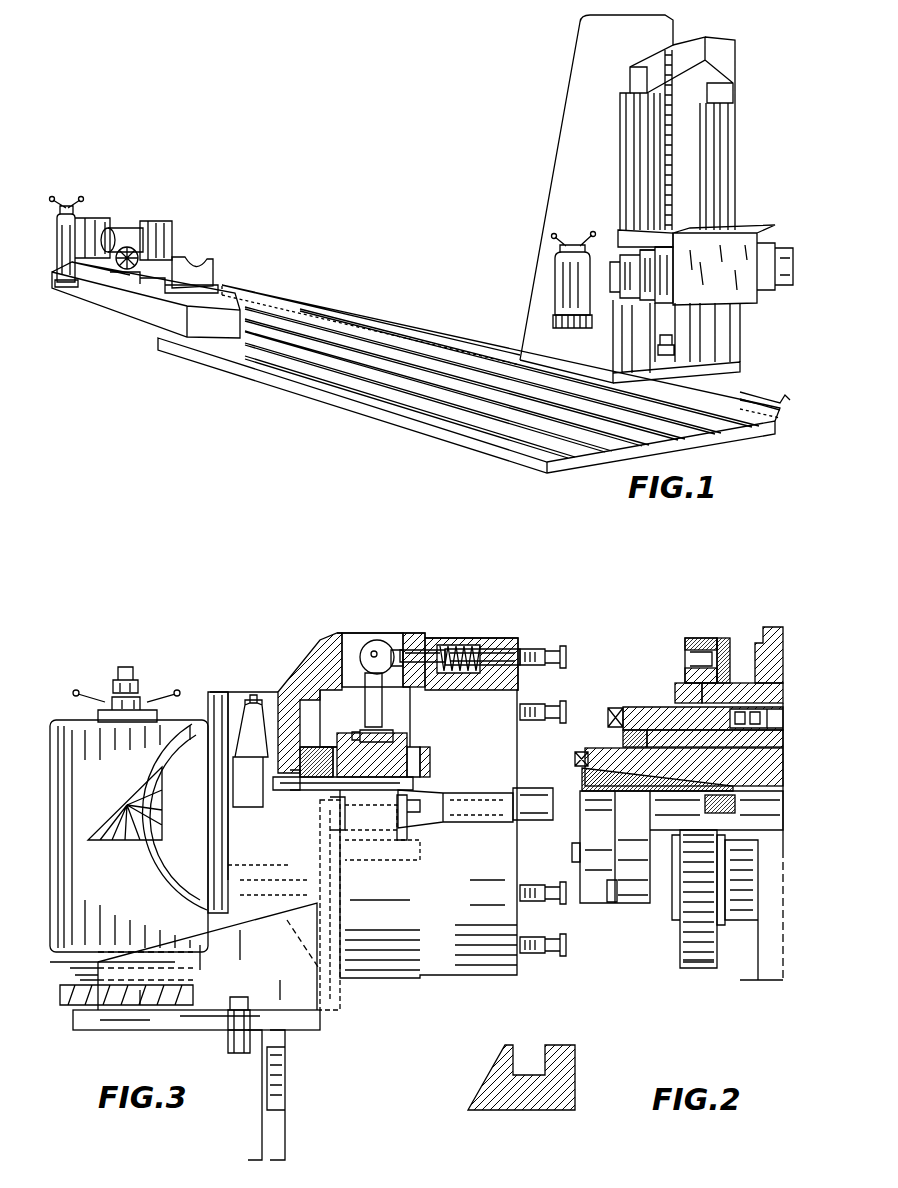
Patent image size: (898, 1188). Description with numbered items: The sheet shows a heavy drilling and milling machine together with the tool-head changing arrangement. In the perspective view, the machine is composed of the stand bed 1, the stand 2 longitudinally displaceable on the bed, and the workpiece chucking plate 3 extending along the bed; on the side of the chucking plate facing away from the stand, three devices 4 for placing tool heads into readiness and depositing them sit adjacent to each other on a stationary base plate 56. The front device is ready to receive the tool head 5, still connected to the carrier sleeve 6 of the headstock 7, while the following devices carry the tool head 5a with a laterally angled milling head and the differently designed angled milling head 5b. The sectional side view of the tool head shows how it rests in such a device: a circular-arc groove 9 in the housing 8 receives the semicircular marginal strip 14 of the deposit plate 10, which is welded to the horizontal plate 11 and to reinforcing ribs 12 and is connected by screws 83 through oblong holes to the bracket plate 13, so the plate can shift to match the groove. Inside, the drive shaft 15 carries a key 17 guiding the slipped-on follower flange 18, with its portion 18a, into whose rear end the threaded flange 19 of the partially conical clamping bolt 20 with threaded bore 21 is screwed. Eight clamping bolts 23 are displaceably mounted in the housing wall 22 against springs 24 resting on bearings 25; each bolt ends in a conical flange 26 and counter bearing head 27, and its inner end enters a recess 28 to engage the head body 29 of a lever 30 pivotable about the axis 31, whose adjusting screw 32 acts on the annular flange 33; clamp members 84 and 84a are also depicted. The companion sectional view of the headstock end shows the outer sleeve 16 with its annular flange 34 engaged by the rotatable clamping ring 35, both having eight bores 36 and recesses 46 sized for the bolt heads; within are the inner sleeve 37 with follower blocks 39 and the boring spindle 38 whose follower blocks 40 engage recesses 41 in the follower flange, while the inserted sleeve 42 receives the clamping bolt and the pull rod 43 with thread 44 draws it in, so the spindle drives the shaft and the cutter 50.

In FIG. 1, the stand bed 1 is at (748, 398).
In FIG. 1, the stand 2 is at (578, 148).
In FIG. 1, the workpiece chucking plate 3 is at (320, 390).
In FIG. 1, the device for placing tool heads into readiness and depositing tool heads 4 is at (153, 210).
In FIG. 1, the tool head 5 is at (604, 310).
In FIG. 3, the tool head 5 is at (262, 672).
In FIG. 1, the tool head with laterally angled off milling head 5a is at (168, 226).
In FIG. 1, the angled milling head 5b is at (100, 222).
In FIG. 1, the carrier sleeve 6 is at (640, 246).
In FIG. 1, the headstock 7 is at (735, 258).
In FIG. 1, the housing 8 is at (652, 262).
In FIG. 3, the housing 8 is at (432, 625).
In FIG. 1, the groove 9 is at (622, 265).
In FIG. 3, the groove 9 is at (333, 648).
In FIG. 1, the deposit plate 10 is at (214, 276).
In FIG. 3, the deposit plate 10 is at (335, 997).
In FIG. 3, the plate 11 is at (148, 1017).
In FIG. 3, the reinforcing ribs 12 is at (212, 980).
In FIG. 3, the bracket plate 13 is at (253, 1121).
In FIG. 1, the marginal strip 14 is at (188, 262).
In FIG. 3, the drive shaft 15 is at (368, 803).
In FIG. 2, the outer sleeve 16 is at (685, 680).
In FIG. 3, the key 17 is at (363, 800).
In FIG. 3, the follower flange 18 is at (365, 755).
In FIG. 3, the sleeve portion 18a is at (341, 819).
In FIG. 3, the threaded flange 19 is at (410, 797).
In FIG. 3, the clamping bolt 20 is at (470, 797).
In FIG. 3, the threaded bore 21 is at (530, 825).
In FIG. 3, the housing wall 22 is at (493, 643).
In FIG. 3, the clamping bolts 23 is at (503, 655).
In FIG. 3, the springs 24 is at (470, 680).
In FIG. 3, the bearings 25 is at (437, 680).
In FIG. 3, the conical flange 26 is at (536, 651).
In FIG. 3, the counter bearing head 27 is at (564, 652).
In FIG. 3, the recess 28 is at (402, 646).
In FIG. 3, the head body 29 is at (366, 645).
In FIG. 3, the lever 30 is at (374, 716).
In FIG. 3, the axis 31 is at (376, 651).
In FIG. 3, the adjusting screw 32 is at (395, 738).
In FIG. 3, the annular flange 33 is at (334, 797).
In FIG. 2, the annular flange 34 is at (695, 637).
In FIG. 2, the clamping ring 35 is at (723, 638).
In FIG. 2, the bores 36 is at (686, 652).
In FIG. 2, the inner sleeve 37 is at (658, 732).
In FIG. 2, the boring spindle 38 is at (693, 768).
In FIG. 2, the follower blocks 39 is at (617, 707).
In FIG. 2, the follower blocks 40 is at (576, 757).
In FIG. 3, the recesses 41 is at (418, 757).
In FIG. 2, the sleeve 42 is at (600, 788).
In FIG. 2, the pull rod 43 is at (742, 910).
In FIG. 2, the thread 44 is at (698, 897).
In FIG. 2, the recesses 46 is at (756, 803).
In FIG. 1, the cutter 50 is at (560, 320).
In FIG. 3, the cutter 50 is at (66, 990).
In FIG. 1, the stationary base plate 56 is at (118, 312).
In FIG. 3, the screws 83 is at (232, 1000).
In FIG. 3, the clamp 84 is at (326, 776).
In FIG. 3, the clamp portion 84a is at (306, 778).